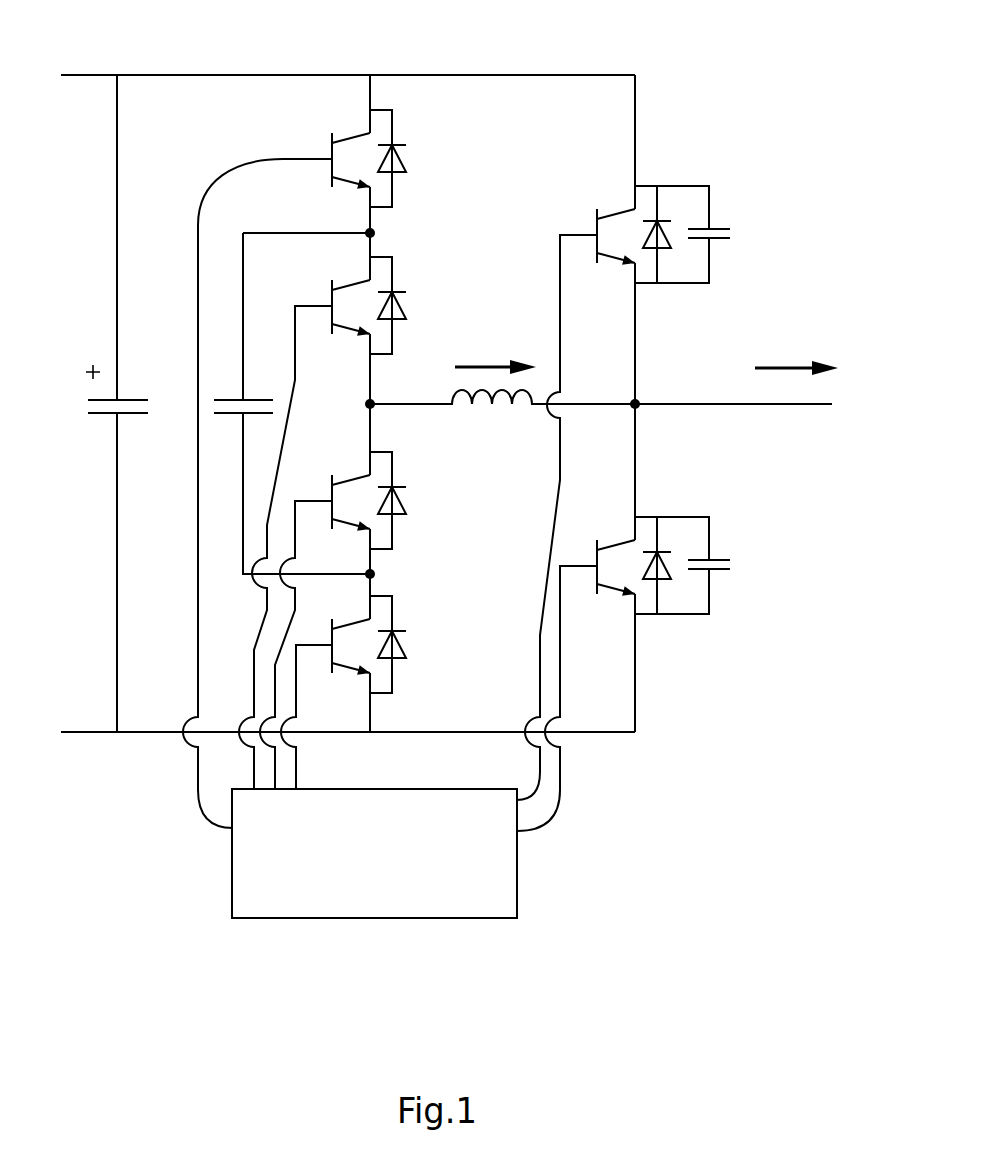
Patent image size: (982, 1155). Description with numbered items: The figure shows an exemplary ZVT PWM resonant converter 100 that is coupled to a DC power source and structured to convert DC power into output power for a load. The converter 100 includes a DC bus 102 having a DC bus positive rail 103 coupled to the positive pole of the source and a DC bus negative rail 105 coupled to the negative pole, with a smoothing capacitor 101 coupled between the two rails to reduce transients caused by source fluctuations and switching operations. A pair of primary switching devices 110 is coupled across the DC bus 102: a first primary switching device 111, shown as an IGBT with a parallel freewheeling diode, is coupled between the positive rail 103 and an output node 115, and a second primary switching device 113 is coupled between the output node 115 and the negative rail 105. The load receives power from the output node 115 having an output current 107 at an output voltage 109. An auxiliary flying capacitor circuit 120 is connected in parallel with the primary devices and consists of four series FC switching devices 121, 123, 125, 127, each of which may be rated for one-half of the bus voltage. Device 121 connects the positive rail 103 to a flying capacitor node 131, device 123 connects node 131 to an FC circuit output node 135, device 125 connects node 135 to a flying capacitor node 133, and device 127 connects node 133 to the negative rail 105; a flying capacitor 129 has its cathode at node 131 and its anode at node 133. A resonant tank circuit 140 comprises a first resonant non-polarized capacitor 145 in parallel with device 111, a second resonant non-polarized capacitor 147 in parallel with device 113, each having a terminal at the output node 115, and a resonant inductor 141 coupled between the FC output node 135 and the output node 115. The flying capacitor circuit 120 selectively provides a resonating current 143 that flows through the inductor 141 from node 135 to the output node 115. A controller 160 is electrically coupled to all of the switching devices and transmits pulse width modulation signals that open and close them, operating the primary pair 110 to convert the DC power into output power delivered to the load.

The ZVT PWM resonant converter 100 is at (135, 832).
The smoothing capacitor 101 is at (100, 417).
The DC bus 102 is at (157, 50).
The DC bus positive rail 103 is at (172, 78).
The DC bus negative rail 105 is at (158, 730).
The output current 107 is at (774, 366).
The output voltage 109 is at (818, 437).
The pair of primary switching devices 110 is at (665, 453).
The first primary switching device 111 is at (648, 184).
The second primary switching device 113 is at (648, 516).
The output node 115 is at (640, 402).
The auxiliary flying capacitor circuit 120 is at (331, 451).
The FC switching device 121 is at (393, 117).
The FC switching device 123 is at (393, 264).
The FC switching device 125 is at (393, 461).
The FC switching device 127 is at (393, 606).
The flying capacitor 129 is at (243, 399).
The flying capacitor node 131 is at (375, 233).
The flying capacitor node 133 is at (375, 574).
The FC circuit output node 135 is at (374, 402).
The resonant tank circuit 140 is at (502, 395).
The resonant inductor 141 is at (508, 408).
The resonating current 143 is at (456, 365).
The first resonant non-polarized capacitor 145 is at (712, 226).
The second resonant non-polarized capacitor 147 is at (712, 558).
The controller 160 is at (518, 845).